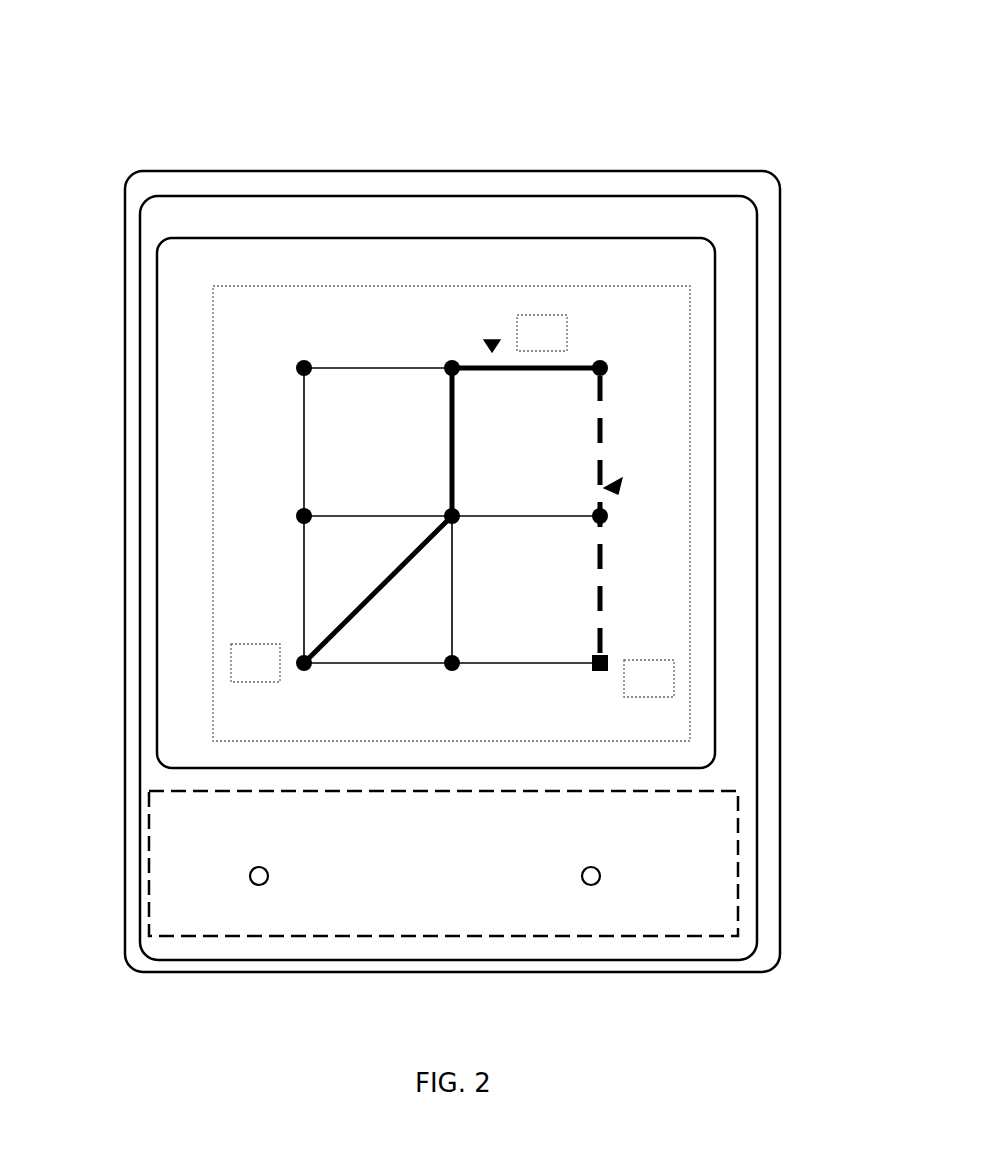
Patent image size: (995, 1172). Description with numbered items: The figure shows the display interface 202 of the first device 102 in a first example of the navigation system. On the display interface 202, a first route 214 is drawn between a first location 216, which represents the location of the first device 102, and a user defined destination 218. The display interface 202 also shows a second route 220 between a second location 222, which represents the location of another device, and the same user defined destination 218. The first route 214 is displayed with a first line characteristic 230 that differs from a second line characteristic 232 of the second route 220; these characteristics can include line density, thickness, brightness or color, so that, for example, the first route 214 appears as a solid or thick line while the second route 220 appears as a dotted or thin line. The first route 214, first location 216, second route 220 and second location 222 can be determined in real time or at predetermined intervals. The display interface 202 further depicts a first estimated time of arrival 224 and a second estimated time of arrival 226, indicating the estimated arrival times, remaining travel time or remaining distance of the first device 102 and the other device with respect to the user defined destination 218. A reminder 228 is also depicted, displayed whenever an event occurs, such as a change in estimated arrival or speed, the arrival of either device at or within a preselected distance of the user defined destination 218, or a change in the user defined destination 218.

The first device 102 is at (163, 128).
The display interface 202 is at (395, 312).
The first route 214 is at (400, 562).
The first location 216 is at (300, 656).
The user defined destination 218 is at (608, 362).
The second route 220 is at (603, 440).
The second location 222 is at (608, 657).
The first estimated time of arrival 224 is at (231, 663).
The second estimated time of arrival 226 is at (674, 678).
The reminder 228 is at (533, 315).
The first line characteristic 230 is at (492, 362).
The second line characteristic 232 is at (615, 483).